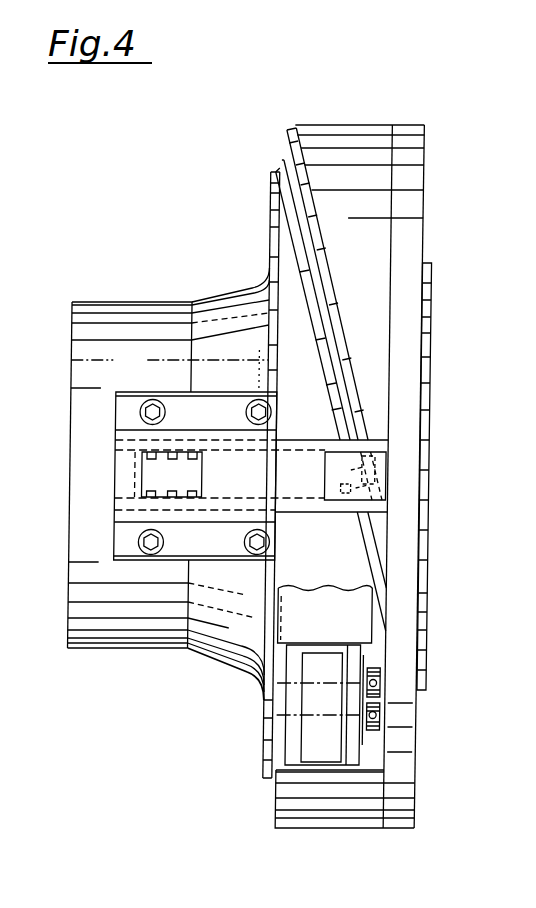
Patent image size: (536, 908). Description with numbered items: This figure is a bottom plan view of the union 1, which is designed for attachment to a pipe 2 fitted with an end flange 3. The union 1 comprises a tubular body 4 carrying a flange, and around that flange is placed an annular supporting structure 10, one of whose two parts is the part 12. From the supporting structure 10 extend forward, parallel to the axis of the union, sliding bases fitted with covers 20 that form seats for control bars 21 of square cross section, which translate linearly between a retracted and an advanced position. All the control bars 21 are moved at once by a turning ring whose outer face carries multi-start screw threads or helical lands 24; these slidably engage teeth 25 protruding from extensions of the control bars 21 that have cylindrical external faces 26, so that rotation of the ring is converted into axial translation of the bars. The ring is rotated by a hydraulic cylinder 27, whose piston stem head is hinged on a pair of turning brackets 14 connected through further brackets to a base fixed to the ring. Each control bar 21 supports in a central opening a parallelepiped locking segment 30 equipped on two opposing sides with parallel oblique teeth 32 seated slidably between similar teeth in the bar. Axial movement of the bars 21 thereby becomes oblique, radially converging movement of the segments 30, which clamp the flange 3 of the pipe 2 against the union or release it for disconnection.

The union 1 is at (436, 180).
The pipe 2 is at (133, 666).
The end flange 3 is at (275, 222).
The tubular body 4 is at (434, 320).
The annular supporting structure 10 is at (412, 118).
The part of supporting structure 12 is at (411, 818).
The turning brackets 14 is at (299, 668).
The covers 20 is at (136, 402).
The control bars 21 is at (396, 434).
The helical lands 24 is at (327, 343).
The teeth 25 is at (385, 467).
The cylindrical external faces 26 is at (338, 476).
The hydraulic cylinder 27 is at (364, 628).
The locking segments 30 is at (136, 496).
The oblique teeth 32 is at (179, 450).